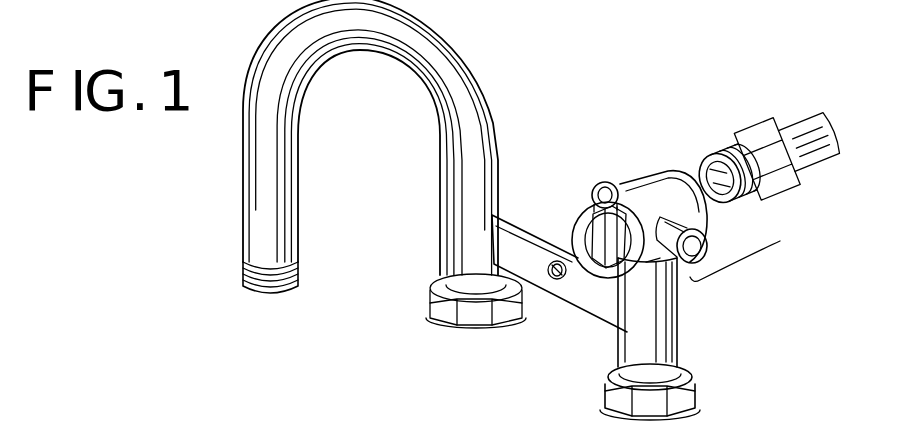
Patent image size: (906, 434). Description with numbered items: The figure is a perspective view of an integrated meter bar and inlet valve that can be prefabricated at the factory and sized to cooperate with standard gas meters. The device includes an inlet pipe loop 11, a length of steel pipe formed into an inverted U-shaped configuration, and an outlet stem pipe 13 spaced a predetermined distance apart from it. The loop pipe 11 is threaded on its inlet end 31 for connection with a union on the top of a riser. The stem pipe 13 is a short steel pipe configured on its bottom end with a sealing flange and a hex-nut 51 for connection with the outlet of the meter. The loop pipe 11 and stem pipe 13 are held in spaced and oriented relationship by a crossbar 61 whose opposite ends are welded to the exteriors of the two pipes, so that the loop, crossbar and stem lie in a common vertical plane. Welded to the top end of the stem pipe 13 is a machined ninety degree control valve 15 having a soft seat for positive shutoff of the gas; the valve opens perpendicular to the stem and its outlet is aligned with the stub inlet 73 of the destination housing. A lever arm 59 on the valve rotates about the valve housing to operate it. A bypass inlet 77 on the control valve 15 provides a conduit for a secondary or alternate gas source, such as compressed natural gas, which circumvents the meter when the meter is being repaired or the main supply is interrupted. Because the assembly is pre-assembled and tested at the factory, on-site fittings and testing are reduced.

The inlet pipe loop 11 is at (458, 50).
The inlet end 31 is at (248, 276).
The crossbar 61 is at (511, 237).
The control valve 15 is at (674, 176).
The lever arm 59 is at (617, 215).
The bypass inlet 77 is at (707, 243).
The stub inlet 73 is at (793, 113).
The stem pipe 13 is at (678, 337).
The hex-nut 51 is at (692, 404).